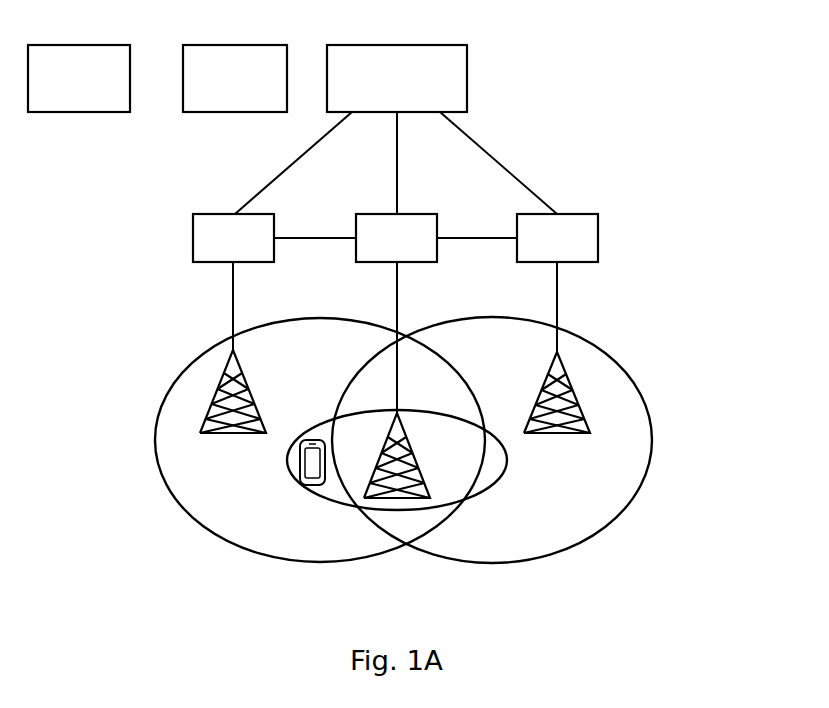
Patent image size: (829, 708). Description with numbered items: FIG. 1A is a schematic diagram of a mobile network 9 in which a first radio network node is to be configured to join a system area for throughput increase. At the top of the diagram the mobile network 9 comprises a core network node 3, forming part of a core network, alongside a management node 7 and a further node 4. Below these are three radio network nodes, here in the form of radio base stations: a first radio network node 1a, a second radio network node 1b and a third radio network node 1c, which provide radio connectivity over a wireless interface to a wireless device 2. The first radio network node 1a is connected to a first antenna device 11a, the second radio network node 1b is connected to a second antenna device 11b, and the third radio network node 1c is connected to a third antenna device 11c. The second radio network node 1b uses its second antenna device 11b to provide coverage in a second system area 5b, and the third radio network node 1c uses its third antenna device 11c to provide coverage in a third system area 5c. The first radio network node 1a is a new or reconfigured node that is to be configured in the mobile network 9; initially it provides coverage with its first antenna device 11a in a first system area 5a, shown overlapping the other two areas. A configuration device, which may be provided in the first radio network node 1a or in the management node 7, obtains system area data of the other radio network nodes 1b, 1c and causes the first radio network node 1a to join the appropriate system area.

The mobile network 9 is at (534, 59).
The operations and maintenance (O&M) node 4 is at (87, 75).
The management node 7 is at (243, 75).
The core network node 3 is at (405, 75).
The first radio network node 1a is at (412, 249).
The second radio network node 1b is at (248, 249).
The third radio network node 1c is at (572, 249).
The first antenna device 11a is at (405, 430).
The second antenna device 11b is at (241, 363).
The third antenna device 11c is at (540, 392).
The first system area 5a is at (497, 486).
The second system area 5b is at (166, 497).
The third system area 5c is at (640, 492).
The wireless device 2 is at (298, 468).